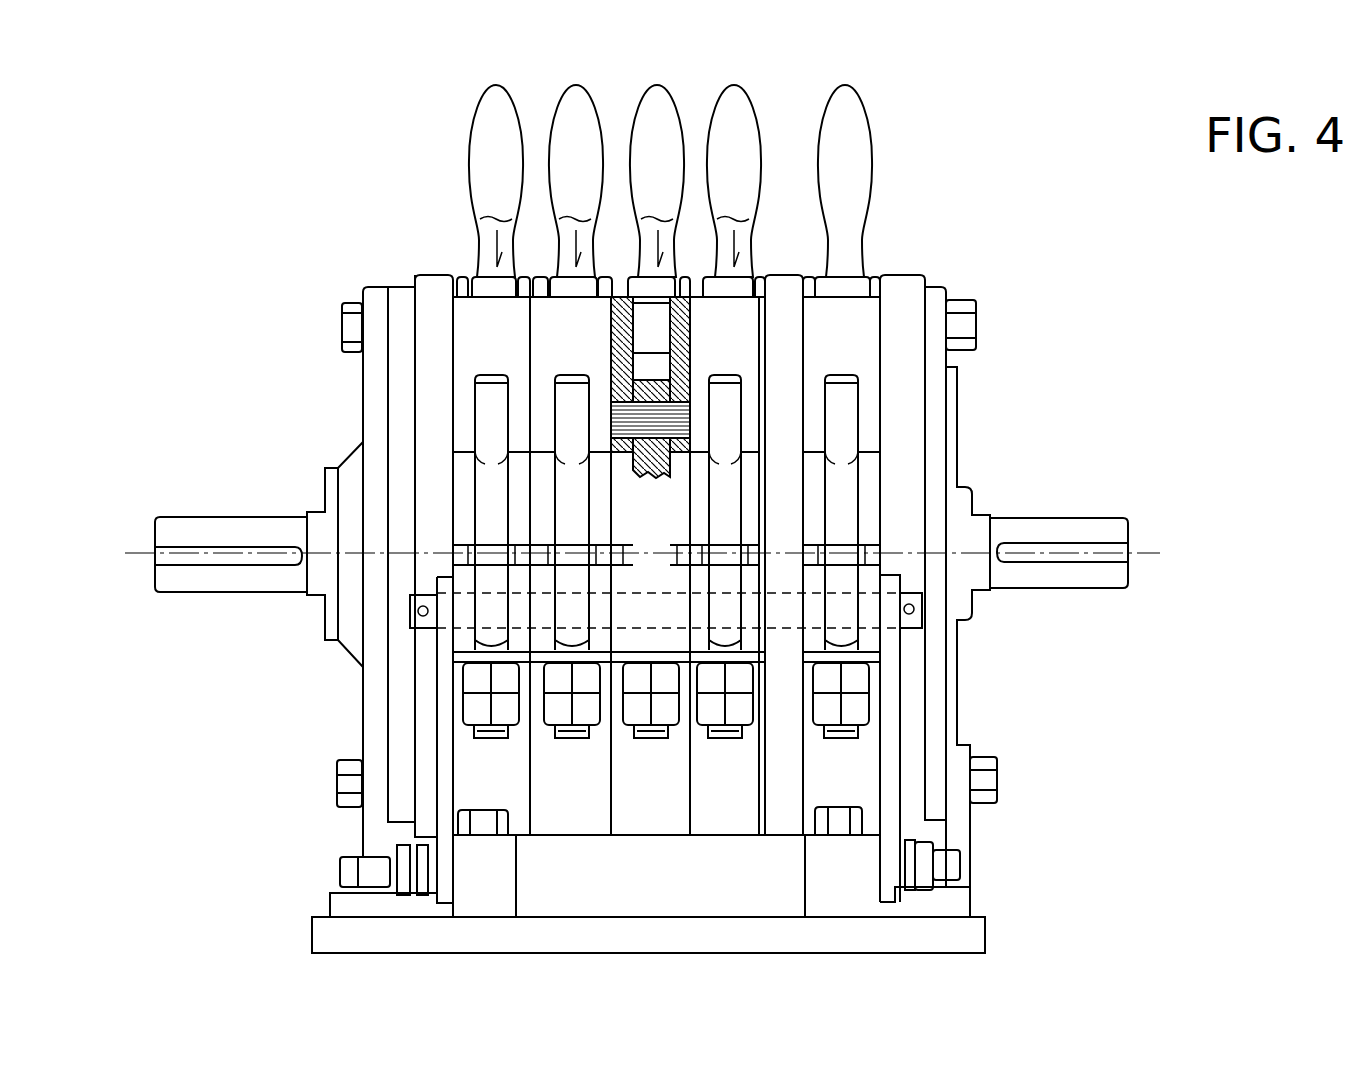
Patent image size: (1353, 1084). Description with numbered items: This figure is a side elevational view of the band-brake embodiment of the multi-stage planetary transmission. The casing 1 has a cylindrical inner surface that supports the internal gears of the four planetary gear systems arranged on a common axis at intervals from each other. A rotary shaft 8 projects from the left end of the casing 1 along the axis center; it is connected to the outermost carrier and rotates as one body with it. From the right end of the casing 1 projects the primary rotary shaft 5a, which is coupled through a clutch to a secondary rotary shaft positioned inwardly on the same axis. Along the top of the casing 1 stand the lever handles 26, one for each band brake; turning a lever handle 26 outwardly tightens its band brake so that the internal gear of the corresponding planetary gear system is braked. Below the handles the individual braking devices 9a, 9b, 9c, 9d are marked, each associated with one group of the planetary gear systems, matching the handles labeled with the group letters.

The casing 1 is at (363, 375).
The rotary shaft 8 is at (233, 517).
The primary rotary shaft 5a is at (1050, 518).
The lever handle 26 is at (467, 173).
The shift unit A 9a is at (714, 860).
The shift unit B 9b is at (639, 860).
The shift unit C 9c is at (559, 860).
The shift unit D 9d is at (482, 860).